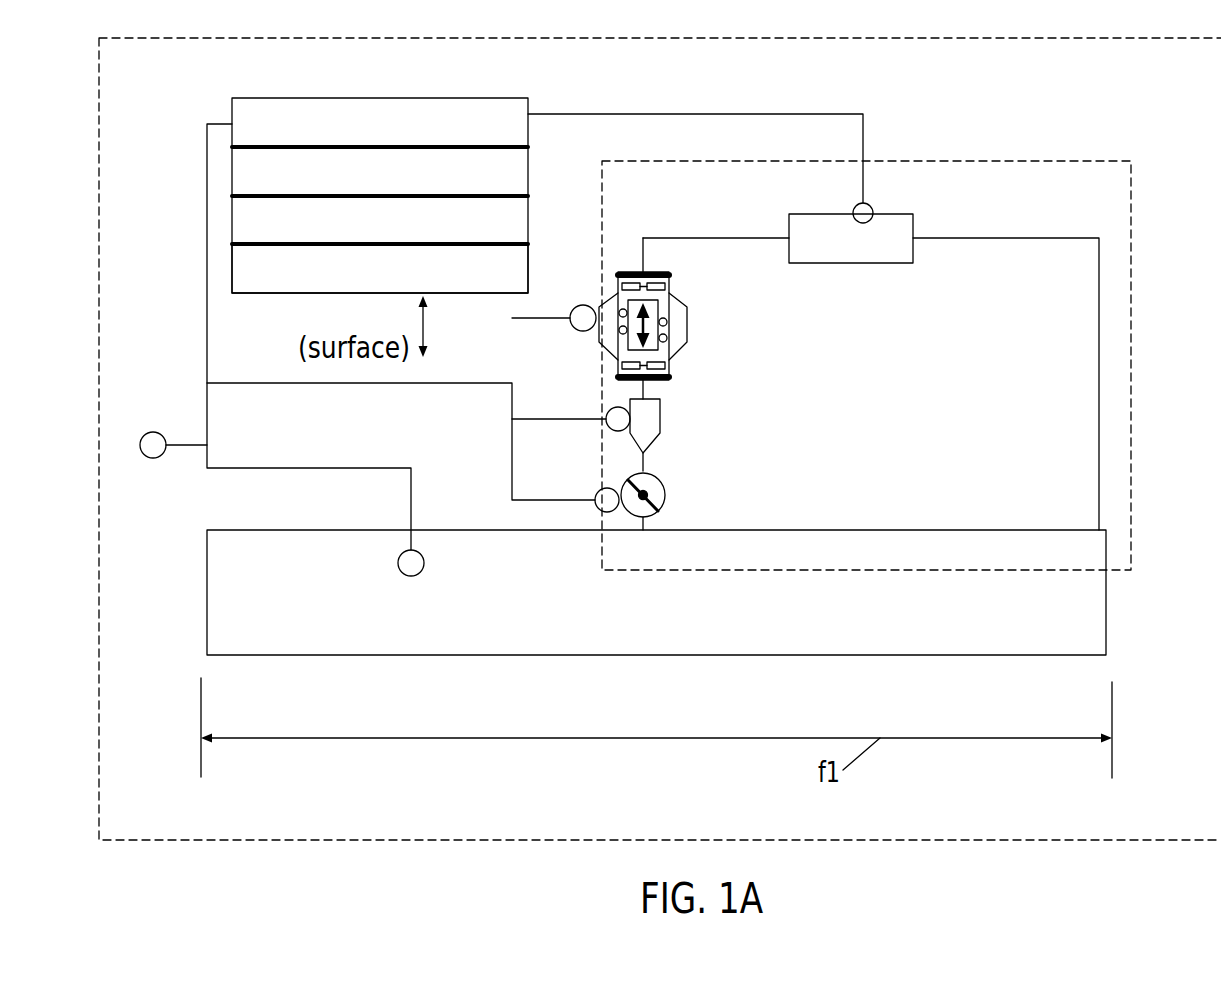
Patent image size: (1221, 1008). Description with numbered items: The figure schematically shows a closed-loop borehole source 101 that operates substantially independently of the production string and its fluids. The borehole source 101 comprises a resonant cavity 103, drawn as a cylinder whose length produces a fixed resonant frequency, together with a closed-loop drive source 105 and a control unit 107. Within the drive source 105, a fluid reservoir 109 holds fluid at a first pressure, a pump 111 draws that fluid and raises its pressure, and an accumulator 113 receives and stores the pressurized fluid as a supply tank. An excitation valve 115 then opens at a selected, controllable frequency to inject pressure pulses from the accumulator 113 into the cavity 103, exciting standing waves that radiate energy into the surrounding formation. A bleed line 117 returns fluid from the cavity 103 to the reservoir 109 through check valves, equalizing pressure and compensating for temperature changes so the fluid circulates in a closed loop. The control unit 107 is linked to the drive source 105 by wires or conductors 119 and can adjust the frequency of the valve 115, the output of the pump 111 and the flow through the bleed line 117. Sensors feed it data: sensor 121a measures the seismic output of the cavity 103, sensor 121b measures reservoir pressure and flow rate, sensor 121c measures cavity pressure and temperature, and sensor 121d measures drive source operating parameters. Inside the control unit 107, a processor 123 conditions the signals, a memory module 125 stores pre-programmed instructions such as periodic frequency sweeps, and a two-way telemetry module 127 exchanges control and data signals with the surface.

The closed-loop borehole source 101 is at (91, 714).
The resonant cavity 103 is at (893, 518).
The closed-loop drive source 105 is at (1006, 150).
The control unit 107 is at (484, 90).
The fluid reservoir 109 is at (825, 264).
The pump 111 is at (687, 324).
The accumulator 113 is at (660, 433).
The excitation valve 115 is at (664, 502).
The bleed line 117 is at (1097, 447).
The wires or conductors 119 is at (186, 258).
The sensor 121a is at (161, 457).
The sensor 121b is at (871, 206).
The sensor 121c is at (418, 551).
The sensor 121d is at (506, 420).
The processor 123 is at (528, 176).
The memory module 125 is at (528, 219).
The two-way telemetry system 127 is at (333, 297).